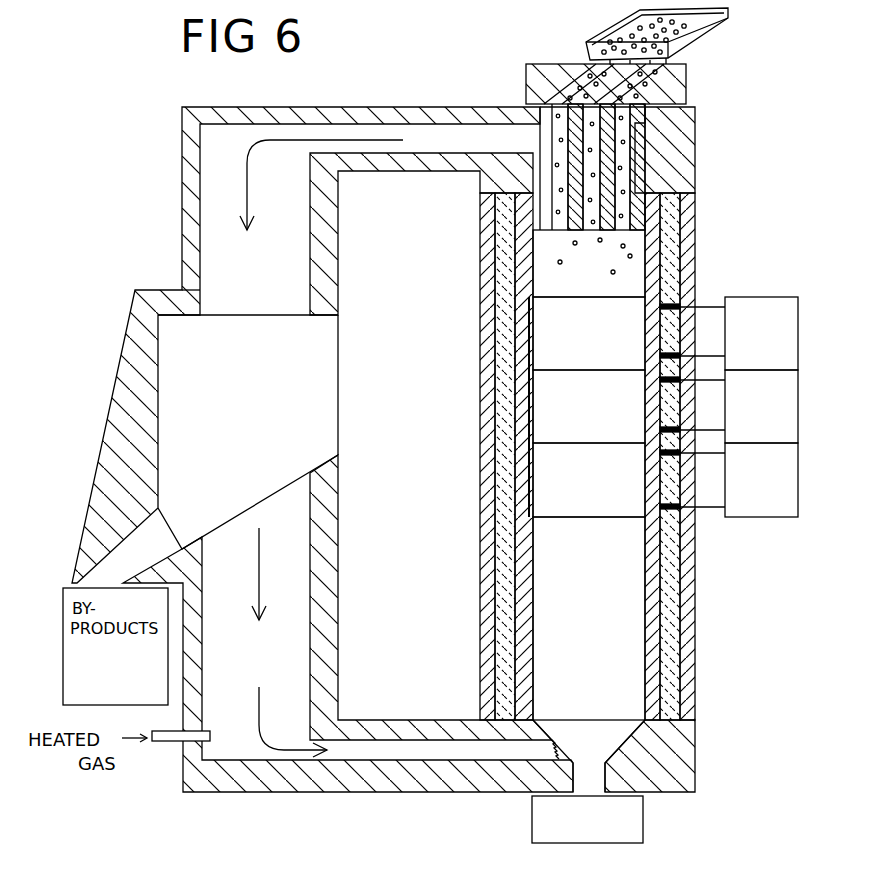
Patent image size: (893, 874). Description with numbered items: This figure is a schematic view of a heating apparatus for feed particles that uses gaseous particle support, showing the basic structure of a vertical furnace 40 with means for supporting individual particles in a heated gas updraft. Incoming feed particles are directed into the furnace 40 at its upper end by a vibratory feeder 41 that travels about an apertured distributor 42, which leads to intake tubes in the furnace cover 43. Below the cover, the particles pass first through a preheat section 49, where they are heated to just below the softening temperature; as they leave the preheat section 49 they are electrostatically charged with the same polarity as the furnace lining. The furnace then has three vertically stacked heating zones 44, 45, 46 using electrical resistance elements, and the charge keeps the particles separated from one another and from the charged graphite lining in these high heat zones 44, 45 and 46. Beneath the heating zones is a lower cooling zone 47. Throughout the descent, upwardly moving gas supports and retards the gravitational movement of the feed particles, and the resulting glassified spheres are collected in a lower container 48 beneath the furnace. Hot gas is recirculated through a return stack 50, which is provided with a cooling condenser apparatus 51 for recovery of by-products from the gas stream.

The furnace 40 is at (699, 222).
The vibratory feeder 41 is at (703, 28).
The apertured distributor 42 is at (690, 84).
The furnace cover 43 is at (683, 165).
The heating zone 44 is at (596, 343).
The heating zone 45 is at (596, 420).
The heating zone 46 is at (596, 496).
The cooling zone 47 is at (596, 612).
The lower container 48 is at (632, 822).
The preheat section 49 is at (588, 285).
The return stack 50 is at (393, 130).
The cooling condenser apparatus 51 is at (252, 422).